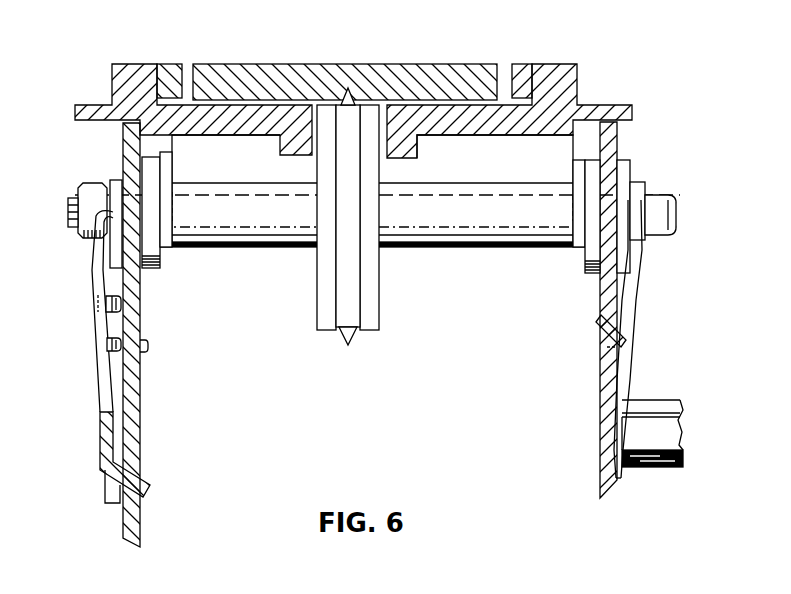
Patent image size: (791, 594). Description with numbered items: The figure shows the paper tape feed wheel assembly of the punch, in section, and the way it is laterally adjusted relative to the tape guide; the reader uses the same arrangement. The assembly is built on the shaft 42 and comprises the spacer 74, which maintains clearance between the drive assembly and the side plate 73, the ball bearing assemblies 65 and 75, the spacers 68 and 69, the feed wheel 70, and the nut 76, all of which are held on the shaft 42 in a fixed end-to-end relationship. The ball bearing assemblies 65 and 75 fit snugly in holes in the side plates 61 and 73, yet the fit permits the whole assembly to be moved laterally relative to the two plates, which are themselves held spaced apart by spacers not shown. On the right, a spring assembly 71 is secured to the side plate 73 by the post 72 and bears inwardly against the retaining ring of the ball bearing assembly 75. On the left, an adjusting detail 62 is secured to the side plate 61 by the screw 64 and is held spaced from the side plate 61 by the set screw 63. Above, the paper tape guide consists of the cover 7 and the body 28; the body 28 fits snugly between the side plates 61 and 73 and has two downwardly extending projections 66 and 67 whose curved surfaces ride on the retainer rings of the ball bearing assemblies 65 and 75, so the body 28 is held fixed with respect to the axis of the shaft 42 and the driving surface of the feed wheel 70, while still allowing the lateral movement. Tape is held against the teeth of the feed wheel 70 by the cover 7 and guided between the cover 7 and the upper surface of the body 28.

The cover 7 is at (300, 63).
The body 28 is at (577, 73).
The shaft 42 is at (680, 222).
The side plate 61 is at (123, 130).
The adjusting detail 62 is at (96, 265).
The set screw 63 is at (104, 302).
The screw 64 is at (105, 352).
The ball bearing assembly 65 is at (150, 268).
The downwardly extending projection 66 is at (170, 178).
The downwardly extending projection 67 is at (575, 174).
The spacer 68 is at (262, 248).
The spacer 69 is at (437, 248).
The feed wheel 70 is at (322, 325).
The spring assembly 71 is at (637, 310).
The post 72 is at (665, 402).
The side plate 73 is at (620, 146).
The spacer 74 is at (640, 192).
The ball bearing assembly 75 is at (587, 268).
The nut 76 is at (82, 188).